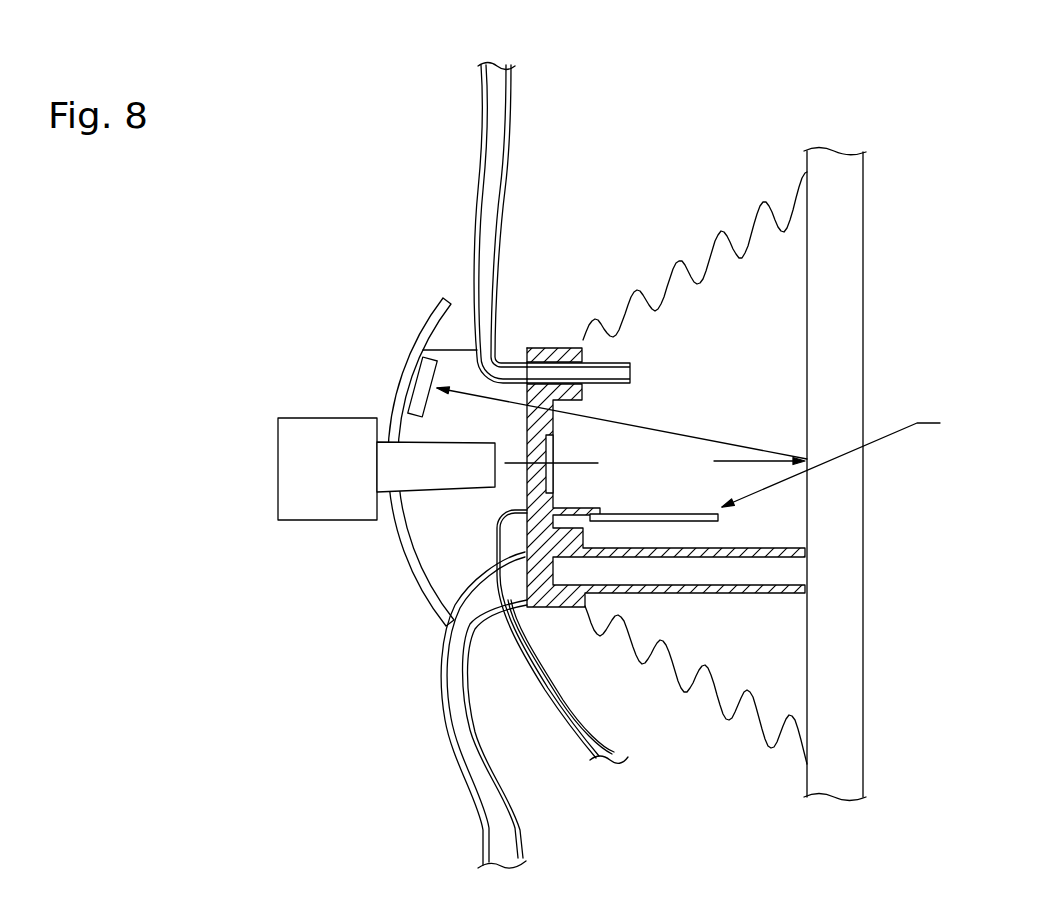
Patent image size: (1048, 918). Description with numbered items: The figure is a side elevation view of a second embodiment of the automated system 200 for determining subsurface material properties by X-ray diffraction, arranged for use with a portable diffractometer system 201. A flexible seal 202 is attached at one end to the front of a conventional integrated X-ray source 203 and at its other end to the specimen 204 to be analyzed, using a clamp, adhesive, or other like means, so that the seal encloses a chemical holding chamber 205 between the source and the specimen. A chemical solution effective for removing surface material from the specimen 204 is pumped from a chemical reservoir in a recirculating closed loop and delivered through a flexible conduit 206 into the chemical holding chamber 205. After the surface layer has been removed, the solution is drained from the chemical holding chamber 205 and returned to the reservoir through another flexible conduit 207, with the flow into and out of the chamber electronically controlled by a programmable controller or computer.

The automated system 200 is at (807, 120).
The portable diffractometer system 201 is at (355, 350).
The flexible seal 202 is at (762, 200).
The integrated X-ray source 203 is at (568, 347).
The specimen 204 is at (867, 568).
The chemical holding chamber 205 is at (723, 345).
The flexible conduit 206 is at (478, 210).
The flexible conduit 207 is at (453, 740).